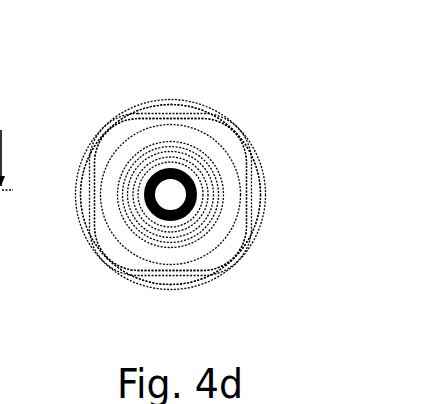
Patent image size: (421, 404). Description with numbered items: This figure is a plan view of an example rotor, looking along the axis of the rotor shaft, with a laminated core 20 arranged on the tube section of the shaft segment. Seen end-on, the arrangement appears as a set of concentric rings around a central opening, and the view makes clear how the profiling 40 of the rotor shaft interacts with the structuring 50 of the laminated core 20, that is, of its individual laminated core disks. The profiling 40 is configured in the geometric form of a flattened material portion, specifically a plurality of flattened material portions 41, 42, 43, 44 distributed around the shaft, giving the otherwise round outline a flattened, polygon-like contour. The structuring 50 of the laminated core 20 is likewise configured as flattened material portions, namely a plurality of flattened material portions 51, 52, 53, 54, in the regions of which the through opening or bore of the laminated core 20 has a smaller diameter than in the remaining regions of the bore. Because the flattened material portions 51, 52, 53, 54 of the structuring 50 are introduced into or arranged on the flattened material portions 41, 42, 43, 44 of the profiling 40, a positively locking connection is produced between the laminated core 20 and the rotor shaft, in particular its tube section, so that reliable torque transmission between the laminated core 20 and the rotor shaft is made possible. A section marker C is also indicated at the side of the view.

The laminated core 20 is at (158, 104).
The profiling 40 is at (186, 209).
The flattened material portion 41 is at (176, 116).
The flattened material portion 42 is at (94, 196).
The flattened material portion 43 is at (174, 272).
The flattened material portion 44 is at (240, 201).
The structuring 50 is at (169, 191).
The flattened material portion 51 is at (158, 109).
The flattened material portion 52 is at (84, 182).
The flattened material portion 53 is at (163, 280).
The flattened material portion 54 is at (254, 204).
The section line C is at (11, 160).